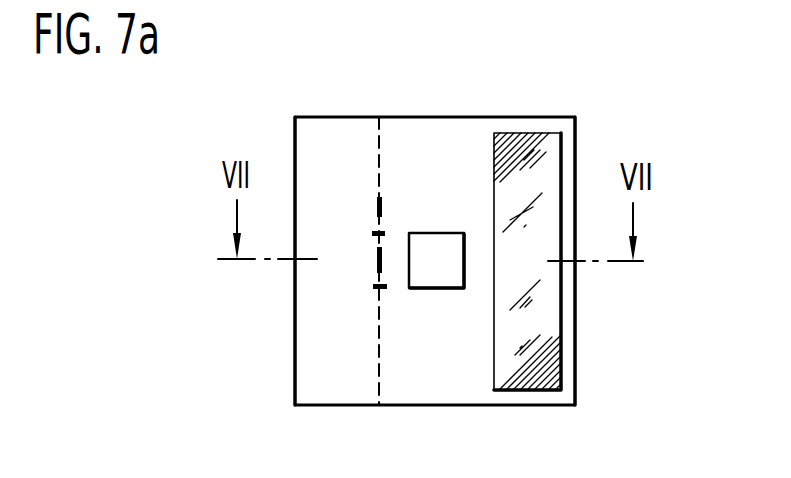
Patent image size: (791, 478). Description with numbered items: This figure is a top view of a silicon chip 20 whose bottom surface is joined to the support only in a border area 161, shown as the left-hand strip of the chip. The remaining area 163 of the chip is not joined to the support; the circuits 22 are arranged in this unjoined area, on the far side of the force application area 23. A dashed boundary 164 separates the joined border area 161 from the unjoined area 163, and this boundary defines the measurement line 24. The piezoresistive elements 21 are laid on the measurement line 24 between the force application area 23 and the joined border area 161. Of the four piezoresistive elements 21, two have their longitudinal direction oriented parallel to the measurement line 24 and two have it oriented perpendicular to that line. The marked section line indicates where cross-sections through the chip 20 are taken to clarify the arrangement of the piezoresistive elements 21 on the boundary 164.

The silicon chip 20 is at (597, 410).
The piezoresistive elements 21 is at (378, 288).
The circuits 22 is at (552, 145).
The force application area 23 is at (433, 270).
The measurement line 24 is at (382, 177).
The border area 161 is at (310, 147).
The area not joined to the substrate 163 is at (464, 143).
The boundary 164 is at (378, 116).